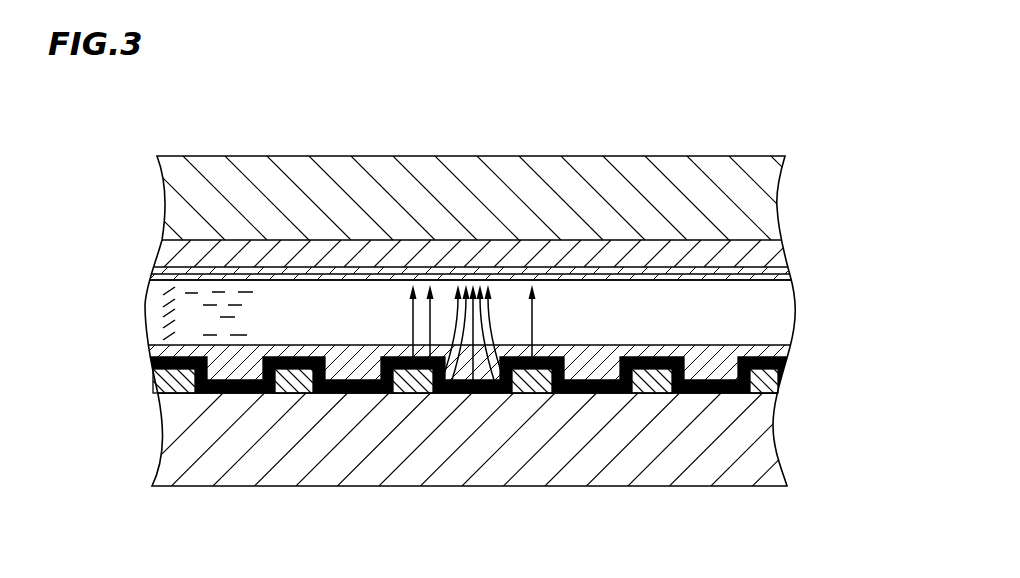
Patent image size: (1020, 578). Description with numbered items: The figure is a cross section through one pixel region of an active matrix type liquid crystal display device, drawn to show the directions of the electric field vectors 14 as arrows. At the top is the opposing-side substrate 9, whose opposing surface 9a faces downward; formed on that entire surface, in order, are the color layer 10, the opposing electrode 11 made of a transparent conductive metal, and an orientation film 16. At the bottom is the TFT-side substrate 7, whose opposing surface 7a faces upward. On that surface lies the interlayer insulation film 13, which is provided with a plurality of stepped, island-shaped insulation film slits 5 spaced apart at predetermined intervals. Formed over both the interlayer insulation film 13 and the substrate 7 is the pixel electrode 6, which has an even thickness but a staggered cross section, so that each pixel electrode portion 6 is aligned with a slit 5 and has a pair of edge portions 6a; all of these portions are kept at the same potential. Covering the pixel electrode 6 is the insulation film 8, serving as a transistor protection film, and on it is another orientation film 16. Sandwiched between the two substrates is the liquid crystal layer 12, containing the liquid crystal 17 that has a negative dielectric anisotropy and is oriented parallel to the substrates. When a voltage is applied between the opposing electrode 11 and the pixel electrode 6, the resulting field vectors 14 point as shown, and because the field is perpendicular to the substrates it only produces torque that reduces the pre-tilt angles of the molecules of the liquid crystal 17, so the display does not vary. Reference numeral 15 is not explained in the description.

The insulation film slit 5 is at (228, 377).
The pixel electrode 6 is at (523, 367).
The edge portion 6a is at (345, 382).
The TFT-side substrate 7 is at (270, 468).
The opposing surface 7a is at (780, 387).
The insulation film 8 is at (688, 358).
The opposing-side substrate 9 is at (237, 183).
The opposing surface 9a is at (750, 228).
The color layer 10 is at (383, 257).
The opposing electrode 11 is at (567, 270).
The liquid crystal layer 12 is at (697, 300).
The interlayer insulation film 13 is at (652, 380).
The electric field vector 14 is at (488, 314).
The light emitting portion 15 is at (460, 390).
The orientation film 16 is at (623, 278).
The liquid crystal 17 is at (163, 317).